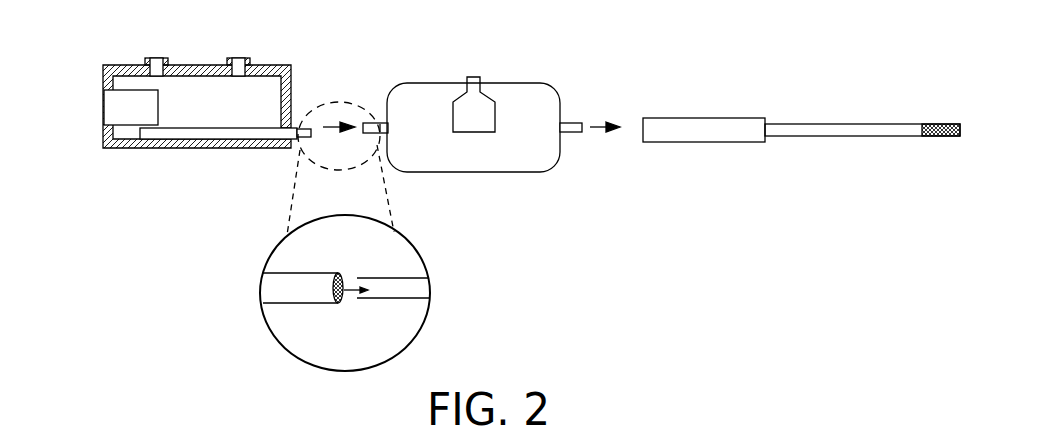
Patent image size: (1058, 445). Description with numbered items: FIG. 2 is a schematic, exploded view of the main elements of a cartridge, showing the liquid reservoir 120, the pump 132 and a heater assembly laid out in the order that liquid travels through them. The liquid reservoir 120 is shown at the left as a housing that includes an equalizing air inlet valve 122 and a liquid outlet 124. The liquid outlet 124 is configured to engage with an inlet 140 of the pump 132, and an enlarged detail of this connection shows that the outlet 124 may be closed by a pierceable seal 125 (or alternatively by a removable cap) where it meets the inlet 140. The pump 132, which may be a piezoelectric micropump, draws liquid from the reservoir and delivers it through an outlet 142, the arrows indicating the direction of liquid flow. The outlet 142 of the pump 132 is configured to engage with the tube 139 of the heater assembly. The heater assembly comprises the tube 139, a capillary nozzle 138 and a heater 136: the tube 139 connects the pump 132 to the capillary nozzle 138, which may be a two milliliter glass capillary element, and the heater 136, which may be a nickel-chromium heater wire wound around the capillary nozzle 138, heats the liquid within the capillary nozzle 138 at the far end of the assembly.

The liquid reservoir 120 is at (207, 65).
The equalizing air inlet valve 122 is at (105, 108).
The liquid outlet 124 is at (292, 128).
The pierceable seal 125 is at (337, 303).
The inlet 140 is at (383, 122).
The pump 132 is at (517, 93).
The outlet 142 is at (571, 135).
The tube 139 is at (710, 118).
The capillary nozzle 138 is at (843, 128).
The heater 136 is at (938, 140).